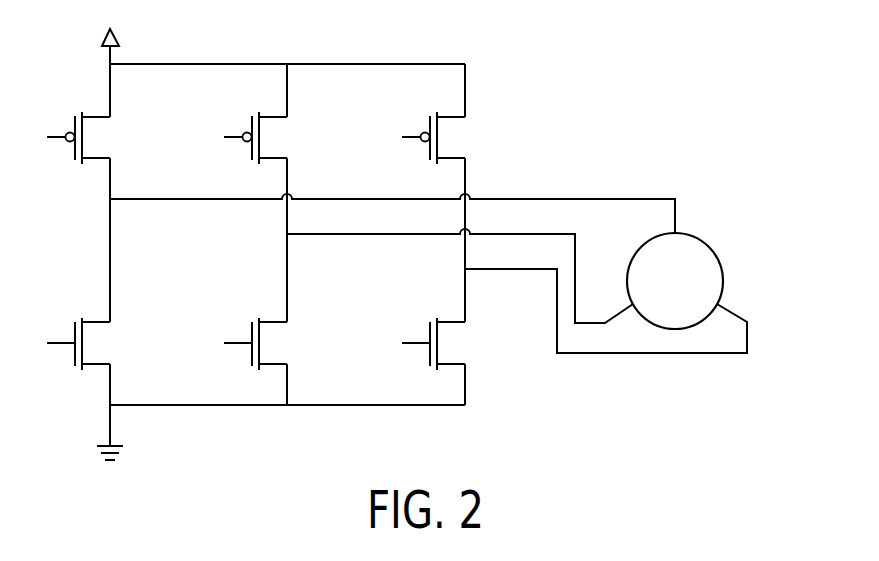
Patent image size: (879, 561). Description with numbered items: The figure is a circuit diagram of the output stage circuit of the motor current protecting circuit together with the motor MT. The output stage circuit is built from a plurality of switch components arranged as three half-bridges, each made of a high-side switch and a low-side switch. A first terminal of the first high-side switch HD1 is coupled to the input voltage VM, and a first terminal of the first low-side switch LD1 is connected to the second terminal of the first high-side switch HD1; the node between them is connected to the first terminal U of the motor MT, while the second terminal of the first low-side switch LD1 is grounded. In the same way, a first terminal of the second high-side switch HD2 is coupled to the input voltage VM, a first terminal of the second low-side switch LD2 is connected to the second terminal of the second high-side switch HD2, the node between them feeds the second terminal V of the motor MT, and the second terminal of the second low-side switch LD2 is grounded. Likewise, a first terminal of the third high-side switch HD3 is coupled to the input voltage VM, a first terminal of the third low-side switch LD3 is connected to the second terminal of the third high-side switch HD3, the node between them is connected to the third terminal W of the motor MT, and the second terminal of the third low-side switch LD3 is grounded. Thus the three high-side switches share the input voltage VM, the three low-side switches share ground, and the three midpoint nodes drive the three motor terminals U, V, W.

The input voltage VM is at (114, 23).
The first high-side switch HD1 is at (78, 120).
The second high-side switch HD2 is at (255, 120).
The third high-side switch HD3 is at (433, 120).
The first low-side switch LD1 is at (78, 326).
The second low-side switch LD2 is at (255, 326).
The third low-side switch LD3 is at (433, 326).
The first terminal of the motor U is at (406, 216).
The second terminal of the motor V is at (460, 276).
The third terminal of the motor W is at (609, 311).
The motor MT is at (708, 258).